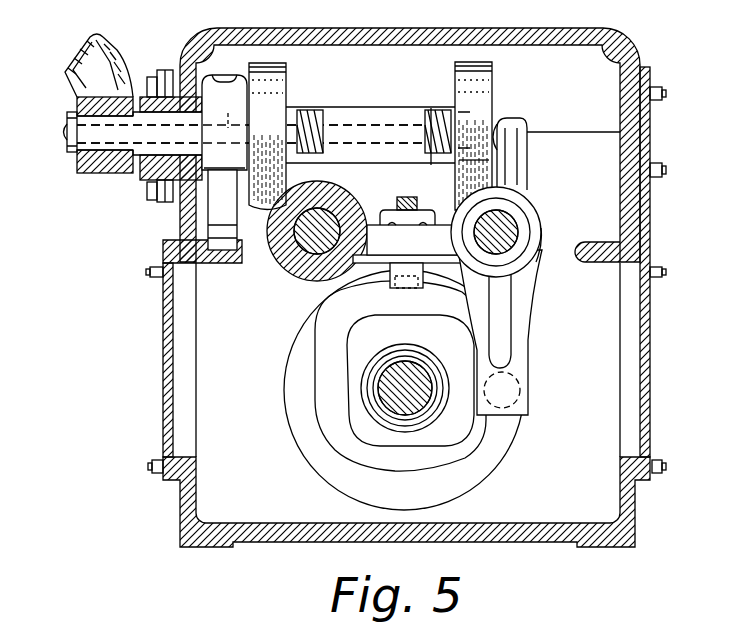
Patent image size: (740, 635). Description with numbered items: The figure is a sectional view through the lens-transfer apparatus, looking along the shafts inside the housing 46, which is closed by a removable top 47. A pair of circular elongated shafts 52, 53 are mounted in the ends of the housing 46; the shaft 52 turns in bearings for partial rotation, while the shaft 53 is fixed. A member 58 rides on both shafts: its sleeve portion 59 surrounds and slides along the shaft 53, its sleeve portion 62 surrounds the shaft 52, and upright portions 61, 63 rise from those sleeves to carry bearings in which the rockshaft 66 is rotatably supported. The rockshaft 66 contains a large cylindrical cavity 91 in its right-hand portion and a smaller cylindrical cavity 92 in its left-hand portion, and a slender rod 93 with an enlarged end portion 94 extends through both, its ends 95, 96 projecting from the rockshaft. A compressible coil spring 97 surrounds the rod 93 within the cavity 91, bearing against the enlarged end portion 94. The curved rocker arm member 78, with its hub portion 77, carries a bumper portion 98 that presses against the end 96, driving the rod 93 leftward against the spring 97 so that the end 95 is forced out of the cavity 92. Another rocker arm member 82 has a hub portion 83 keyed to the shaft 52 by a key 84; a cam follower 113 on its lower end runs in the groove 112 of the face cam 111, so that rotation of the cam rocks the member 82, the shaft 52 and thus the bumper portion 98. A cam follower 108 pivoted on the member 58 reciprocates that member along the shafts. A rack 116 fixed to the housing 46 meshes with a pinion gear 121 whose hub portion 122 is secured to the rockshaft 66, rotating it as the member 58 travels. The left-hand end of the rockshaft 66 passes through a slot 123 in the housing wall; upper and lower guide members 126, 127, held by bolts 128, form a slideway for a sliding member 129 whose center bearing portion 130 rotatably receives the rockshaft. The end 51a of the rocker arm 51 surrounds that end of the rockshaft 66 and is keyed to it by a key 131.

The housing 46 is at (640, 515).
The removable top 47 is at (632, 30).
The rocker arm 51 is at (88, 36).
The end of rocker arm 51a is at (77, 168).
The shaft 52 is at (520, 228).
The shaft 53 is at (318, 252).
The member 58 is at (392, 256).
The sleeve portion 59 is at (335, 186).
The upright portion 61 is at (287, 85).
The sleeve portion 62 is at (528, 188).
The upright portion 63 is at (492, 76).
The rockshaft 66 is at (378, 108).
The hub portion 77 is at (542, 244).
The curved rocker arm member 78 is at (530, 148).
The rocker arm member 82 is at (533, 333).
The hub portion 83 is at (515, 260).
The key 84 is at (473, 169).
The cylindrical cavity 91 is at (320, 117).
The cylindrical cavity 92 is at (230, 110).
The rod 93 is at (432, 165).
The enlarged end portion 94 is at (458, 127).
The end of rod 95 is at (65, 128).
The end of rod 96 is at (497, 127).
The compressible coil spring 97 is at (428, 112).
The bumper portion 98 is at (527, 130).
The cam follower 108 is at (410, 265).
The face cam 111 is at (410, 507).
The groove 112 is at (460, 472).
The cam follower 113 is at (520, 392).
The rack 116 is at (222, 252).
The pinion gear 121 is at (242, 226).
The hub portion 122 is at (225, 162).
The slot 123 is at (216, 81).
The upper guide member 126 is at (166, 70).
The lower guide member 127 is at (163, 202).
The bolt 128 is at (156, 196).
The sliding member 129 is at (156, 88).
The center bearing portion 130 is at (150, 168).
The key 131 is at (72, 150).